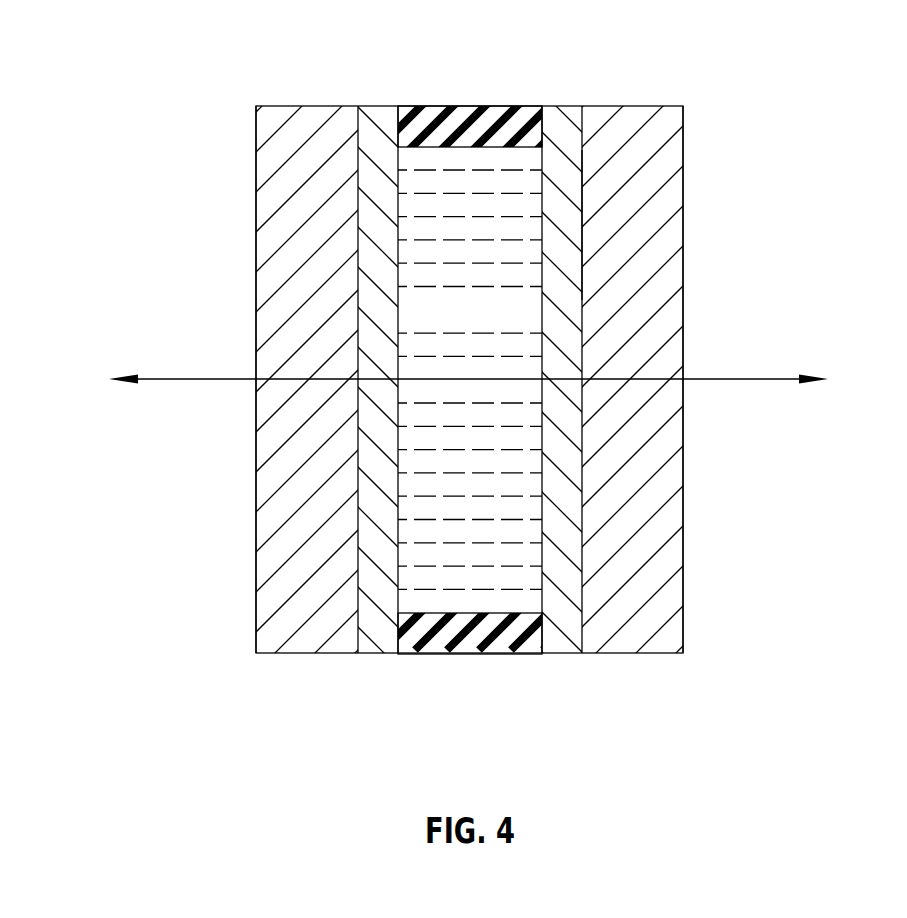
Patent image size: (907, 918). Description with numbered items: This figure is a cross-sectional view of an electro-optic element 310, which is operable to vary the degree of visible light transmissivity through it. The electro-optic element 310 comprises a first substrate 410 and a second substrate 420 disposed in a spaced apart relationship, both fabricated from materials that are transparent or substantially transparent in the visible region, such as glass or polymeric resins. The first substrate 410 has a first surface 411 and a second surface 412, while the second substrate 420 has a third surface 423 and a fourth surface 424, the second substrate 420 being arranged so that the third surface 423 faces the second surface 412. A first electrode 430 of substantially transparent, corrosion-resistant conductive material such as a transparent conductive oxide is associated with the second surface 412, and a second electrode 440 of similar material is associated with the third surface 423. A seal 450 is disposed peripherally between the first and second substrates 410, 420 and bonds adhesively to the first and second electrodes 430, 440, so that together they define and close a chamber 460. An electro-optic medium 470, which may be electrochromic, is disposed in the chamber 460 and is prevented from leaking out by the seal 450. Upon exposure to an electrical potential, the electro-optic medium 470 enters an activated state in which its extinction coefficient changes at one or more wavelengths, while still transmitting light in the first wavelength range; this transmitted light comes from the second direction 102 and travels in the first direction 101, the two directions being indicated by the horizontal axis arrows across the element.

The electro-optic element 310 is at (235, 92).
The first substrate 410 is at (310, 284).
The first surface 411 is at (256, 172).
The second surface 412 is at (358, 210).
The second substrate 420 is at (628, 283).
The third surface 423 is at (582, 210).
The fourth surface 424 is at (683, 172).
The first electrode 430 is at (370, 107).
The second electrode 440 is at (570, 110).
The seal 450 is at (463, 110).
The chamber 460 is at (492, 322).
The electro-optic medium 470 is at (490, 532).
The first direction 101 is at (271, 379).
The second direction 102 is at (669, 379).